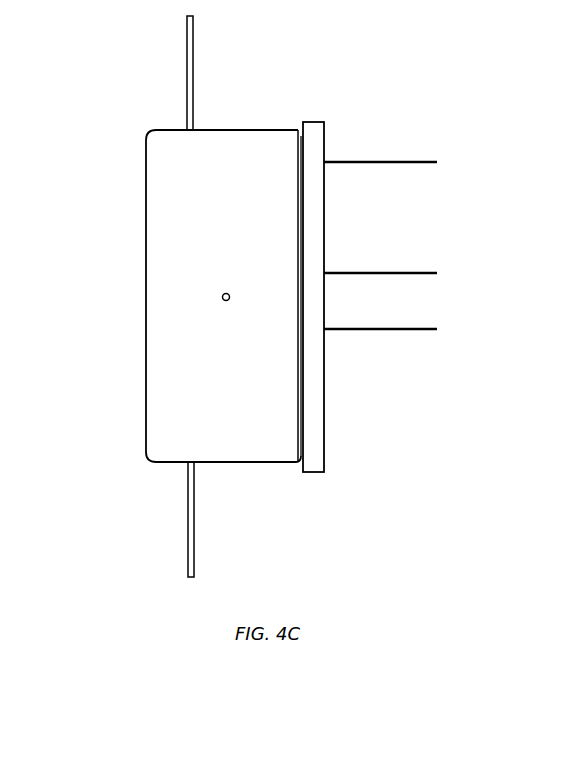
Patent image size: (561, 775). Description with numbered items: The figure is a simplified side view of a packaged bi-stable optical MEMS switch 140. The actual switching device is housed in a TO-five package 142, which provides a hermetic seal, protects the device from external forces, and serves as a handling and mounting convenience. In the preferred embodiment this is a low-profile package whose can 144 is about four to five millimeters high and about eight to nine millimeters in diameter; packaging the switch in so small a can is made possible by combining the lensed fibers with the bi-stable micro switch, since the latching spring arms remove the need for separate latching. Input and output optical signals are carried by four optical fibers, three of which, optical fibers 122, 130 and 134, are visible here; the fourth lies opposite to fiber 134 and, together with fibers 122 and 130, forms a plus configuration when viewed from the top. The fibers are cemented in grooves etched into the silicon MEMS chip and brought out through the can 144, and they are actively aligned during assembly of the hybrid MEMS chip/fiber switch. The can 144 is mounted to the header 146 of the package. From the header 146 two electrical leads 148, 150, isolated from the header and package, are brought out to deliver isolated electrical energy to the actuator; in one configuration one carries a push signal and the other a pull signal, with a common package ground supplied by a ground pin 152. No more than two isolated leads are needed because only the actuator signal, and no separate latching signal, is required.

The packaged bi-stable optical MEMS switch 140 is at (271, 104).
The TO-5 package 142 is at (147, 373).
The can 144 is at (156, 291).
The optical fiber 134 is at (224, 290).
The header 146 is at (312, 122).
The optical fiber 122 is at (187, 93).
The optical fiber 130 is at (195, 518).
The isolated electrical lead 148 is at (414, 162).
The ground pin 152 is at (414, 273).
The isolated electrical lead 150 is at (414, 329).